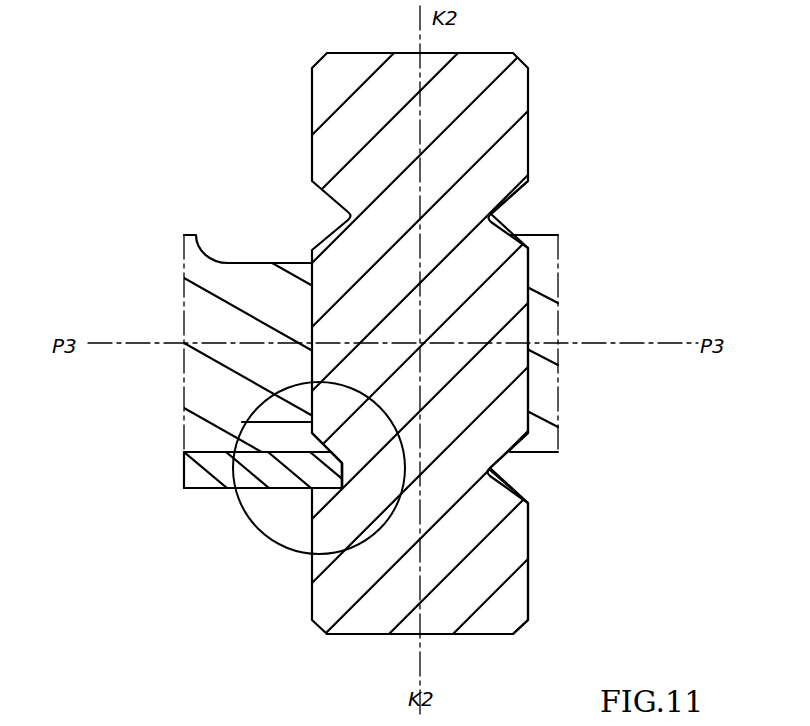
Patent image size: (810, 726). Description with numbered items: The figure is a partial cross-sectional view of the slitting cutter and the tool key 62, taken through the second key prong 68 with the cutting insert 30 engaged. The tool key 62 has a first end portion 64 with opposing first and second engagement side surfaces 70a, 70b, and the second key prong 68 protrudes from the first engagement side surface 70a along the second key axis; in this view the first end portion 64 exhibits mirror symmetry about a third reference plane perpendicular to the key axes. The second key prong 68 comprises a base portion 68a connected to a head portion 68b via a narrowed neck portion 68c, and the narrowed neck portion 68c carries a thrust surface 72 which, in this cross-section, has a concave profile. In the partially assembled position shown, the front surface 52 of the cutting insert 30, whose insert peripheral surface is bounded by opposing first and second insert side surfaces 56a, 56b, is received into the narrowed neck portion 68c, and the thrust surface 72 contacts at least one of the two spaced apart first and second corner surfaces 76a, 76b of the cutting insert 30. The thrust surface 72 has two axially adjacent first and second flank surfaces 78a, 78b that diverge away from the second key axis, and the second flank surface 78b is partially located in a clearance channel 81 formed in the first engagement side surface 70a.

The cutting insert 30 is at (192, 465).
The front surface 52 is at (345, 466).
The first insert side surface 56a is at (207, 490).
The second insert side surface 56b is at (220, 450).
The tool key 62 is at (560, 275).
The first end portion 64 is at (245, 288).
The second key prong 68 is at (487, 587).
The base portion 68a is at (500, 428).
The head portion 68b is at (495, 548).
The narrowed neck portion 68c is at (530, 485).
The first engagement side surface 70a is at (541, 455).
The second engagement side surface 70b is at (538, 233).
The thrust surface 72 is at (330, 490).
The first corner surface 76a is at (324, 492).
The second corner surface 76b is at (360, 466).
The first flank surface 78a is at (322, 492).
The second flank surface 78b is at (312, 438).
The clearance channel 81 is at (252, 437).